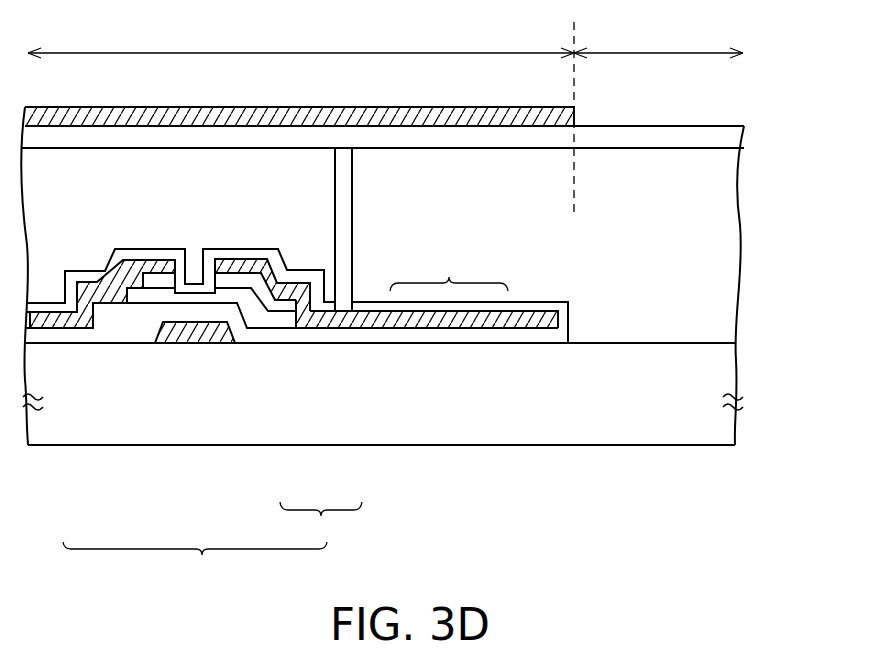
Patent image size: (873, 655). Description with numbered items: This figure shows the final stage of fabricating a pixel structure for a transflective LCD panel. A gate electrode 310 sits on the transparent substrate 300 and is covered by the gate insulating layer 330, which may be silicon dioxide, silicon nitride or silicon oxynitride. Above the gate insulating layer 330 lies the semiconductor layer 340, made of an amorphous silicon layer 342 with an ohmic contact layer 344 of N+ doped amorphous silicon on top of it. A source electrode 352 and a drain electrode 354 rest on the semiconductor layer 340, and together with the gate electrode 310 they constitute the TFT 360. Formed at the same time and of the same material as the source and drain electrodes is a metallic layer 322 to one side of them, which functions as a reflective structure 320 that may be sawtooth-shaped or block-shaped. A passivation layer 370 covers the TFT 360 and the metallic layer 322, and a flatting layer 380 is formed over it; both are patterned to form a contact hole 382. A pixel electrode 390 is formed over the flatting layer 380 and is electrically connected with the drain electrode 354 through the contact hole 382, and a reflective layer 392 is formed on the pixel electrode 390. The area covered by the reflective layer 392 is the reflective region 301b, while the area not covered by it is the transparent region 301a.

The transparent substrate 300 is at (735, 361).
The transparent region 301a is at (658, 38).
The reflective region 301b is at (301, 116).
The gate electrode 310 is at (175, 328).
The reflective structure 320 is at (434, 287).
The metallic layer 322 is at (403, 336).
The gate insulating layer 330 is at (58, 333).
The semiconductor layer 340 is at (222, 401).
The amorphous silicon layer 342 is at (253, 303).
The ohmic contact layer 344 is at (284, 303).
The source electrode 352 is at (148, 292).
The drain electrode 354 is at (223, 278).
The TFT 360 is at (195, 567).
The passivation layer 370 is at (153, 257).
The flatting layer 380 is at (730, 202).
The contact hole 382 is at (353, 271).
The pixel electrode 390 is at (733, 138).
The reflective layer 392 is at (524, 106).